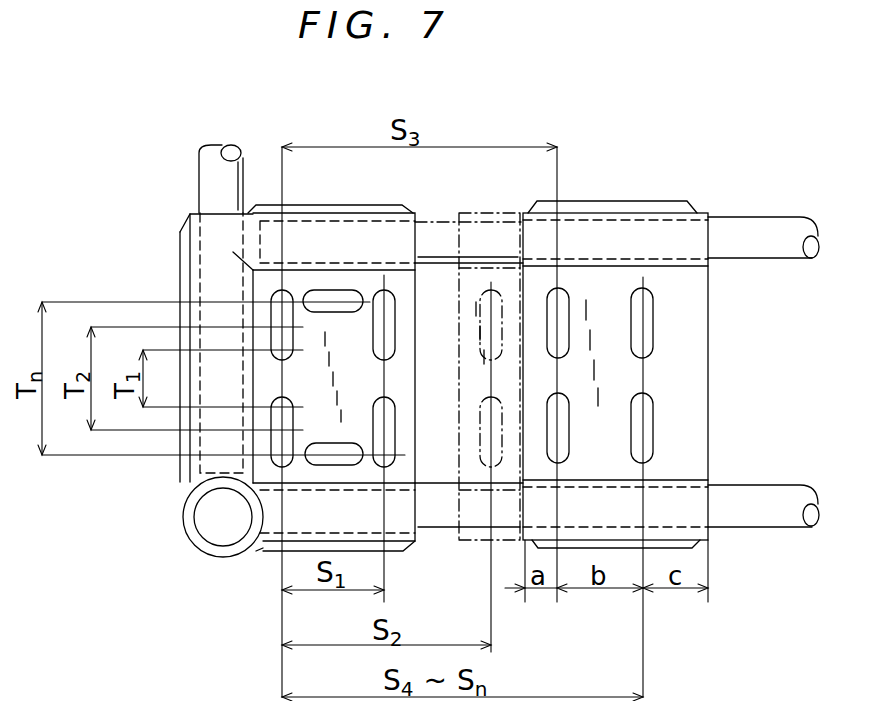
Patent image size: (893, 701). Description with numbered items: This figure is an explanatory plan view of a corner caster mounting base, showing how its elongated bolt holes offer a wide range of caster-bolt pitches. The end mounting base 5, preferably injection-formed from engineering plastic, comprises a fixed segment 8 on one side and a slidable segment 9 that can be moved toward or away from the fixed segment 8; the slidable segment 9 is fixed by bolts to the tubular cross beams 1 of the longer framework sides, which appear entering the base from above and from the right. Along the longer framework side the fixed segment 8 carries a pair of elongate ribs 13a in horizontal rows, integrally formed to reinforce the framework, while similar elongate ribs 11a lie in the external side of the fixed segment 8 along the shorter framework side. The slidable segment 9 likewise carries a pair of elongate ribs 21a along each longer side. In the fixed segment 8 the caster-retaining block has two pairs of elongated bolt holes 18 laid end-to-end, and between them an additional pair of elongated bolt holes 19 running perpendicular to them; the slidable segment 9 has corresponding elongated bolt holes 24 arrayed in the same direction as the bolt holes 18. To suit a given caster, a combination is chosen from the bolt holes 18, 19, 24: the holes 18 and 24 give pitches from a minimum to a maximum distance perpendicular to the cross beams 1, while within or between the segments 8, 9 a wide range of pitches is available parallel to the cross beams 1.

The tubular cross beam 1 is at (215, 185).
The end mounting base 5 is at (557, 78).
The fixed segment 8 is at (303, 512).
The slidable segment 9 is at (680, 432).
The elongate ribs 11a is at (183, 440).
The elongate ribs 13a is at (288, 205).
The elongated bolt holes 18 is at (250, 310).
The elongated bolt holes 19 is at (335, 290).
The elongate ribs 21a is at (598, 202).
The elongated bolt holes 24 is at (647, 320).